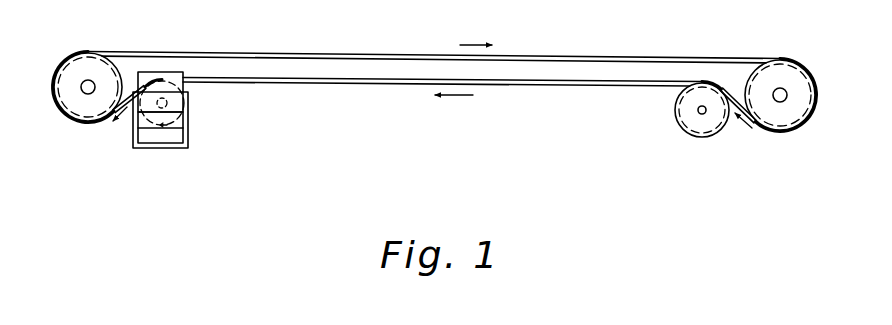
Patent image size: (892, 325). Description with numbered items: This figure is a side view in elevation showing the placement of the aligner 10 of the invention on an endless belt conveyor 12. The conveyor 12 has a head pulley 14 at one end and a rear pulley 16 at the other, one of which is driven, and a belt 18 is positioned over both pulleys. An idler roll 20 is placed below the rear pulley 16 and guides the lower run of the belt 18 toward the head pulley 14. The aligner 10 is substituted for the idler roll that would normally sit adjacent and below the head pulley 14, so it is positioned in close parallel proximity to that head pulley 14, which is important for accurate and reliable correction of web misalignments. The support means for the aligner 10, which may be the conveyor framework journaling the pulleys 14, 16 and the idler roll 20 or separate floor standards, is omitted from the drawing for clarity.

The aligner 10 is at (197, 140).
The endless belt conveyor 12 is at (435, 74).
The head pulley 14 is at (92, 56).
The rear pulley 16 is at (798, 70).
The belt 18 is at (655, 56).
The idler roll 20 is at (688, 121).